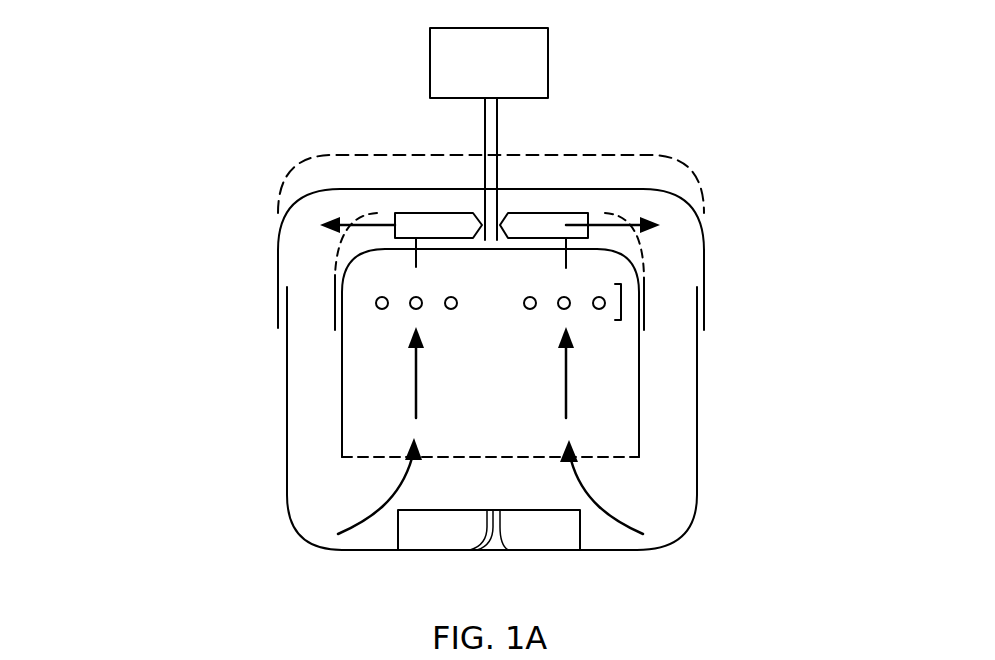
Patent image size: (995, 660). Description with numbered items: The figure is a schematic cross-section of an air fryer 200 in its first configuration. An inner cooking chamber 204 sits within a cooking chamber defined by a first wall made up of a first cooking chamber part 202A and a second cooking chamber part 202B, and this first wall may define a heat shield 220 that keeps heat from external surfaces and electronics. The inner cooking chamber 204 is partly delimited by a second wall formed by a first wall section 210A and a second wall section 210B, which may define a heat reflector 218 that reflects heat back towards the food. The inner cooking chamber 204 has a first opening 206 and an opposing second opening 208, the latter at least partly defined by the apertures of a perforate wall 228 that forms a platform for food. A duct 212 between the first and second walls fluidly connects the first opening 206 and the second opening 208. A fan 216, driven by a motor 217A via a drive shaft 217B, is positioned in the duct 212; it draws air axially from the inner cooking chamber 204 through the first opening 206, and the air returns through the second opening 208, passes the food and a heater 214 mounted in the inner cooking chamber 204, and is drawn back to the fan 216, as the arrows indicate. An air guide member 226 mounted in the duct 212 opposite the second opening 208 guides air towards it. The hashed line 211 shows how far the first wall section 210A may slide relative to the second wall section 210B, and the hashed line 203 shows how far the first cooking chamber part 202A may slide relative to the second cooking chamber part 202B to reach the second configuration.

The air fryer 200 is at (143, 106).
The hashed line 203 is at (291, 168).
The fan 216 is at (442, 227).
The motor 217A is at (527, 52).
The drive shaft 217B is at (488, 147).
The first opening 206 is at (643, 187).
The heat shield 220 is at (683, 203).
The hashed line 211 is at (370, 220).
The heat reflector 218 is at (343, 233).
The first wall section 210A is at (600, 249).
The first cooking chamber part 202A is at (278, 320).
The heater 214 is at (622, 302).
The second wall section 210B is at (340, 355).
The inner cooking chamber 204 is at (597, 393).
The second cooking chamber part 202B is at (287, 443).
The second opening 208 is at (367, 460).
The duct 212 is at (670, 472).
The air guide member 226 is at (420, 538).
The perforate wall 228 is at (613, 458).